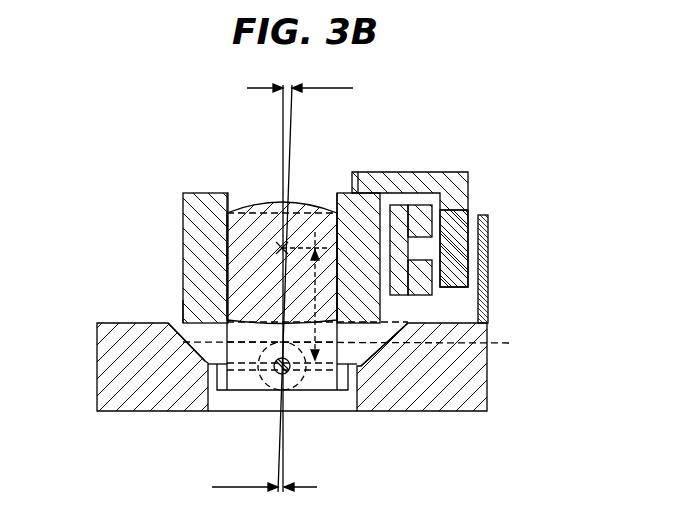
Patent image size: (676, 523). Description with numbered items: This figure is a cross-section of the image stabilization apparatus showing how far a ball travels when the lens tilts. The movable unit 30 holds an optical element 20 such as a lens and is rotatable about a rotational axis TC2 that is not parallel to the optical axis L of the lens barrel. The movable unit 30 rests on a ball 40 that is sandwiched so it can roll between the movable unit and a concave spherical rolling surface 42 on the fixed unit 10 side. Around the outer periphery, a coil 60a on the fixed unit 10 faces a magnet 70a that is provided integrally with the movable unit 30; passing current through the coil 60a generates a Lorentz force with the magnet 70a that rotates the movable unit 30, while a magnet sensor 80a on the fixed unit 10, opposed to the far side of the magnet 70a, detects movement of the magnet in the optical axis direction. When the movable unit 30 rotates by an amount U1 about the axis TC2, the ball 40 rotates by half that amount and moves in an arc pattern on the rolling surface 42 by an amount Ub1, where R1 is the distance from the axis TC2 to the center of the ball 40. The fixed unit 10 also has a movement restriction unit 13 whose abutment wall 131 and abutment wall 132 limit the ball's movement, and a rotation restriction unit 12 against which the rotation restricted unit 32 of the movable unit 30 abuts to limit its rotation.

The fixed unit 10 is at (483, 372).
The rotation restriction unit 12 is at (207, 385).
The movement restriction unit 13 is at (300, 395).
The optical element 20 is at (267, 203).
The movable unit 30 is at (197, 193).
The rotation restricted unit 32 is at (208, 372).
The ball 40 is at (243, 392).
The rolling surface 42 is at (274, 385).
The coil 60a is at (433, 275).
The magnet 70a is at (463, 275).
The magnet sensor 80a is at (485, 247).
The abutment wall 131 is at (183, 300).
The abutment wall 132 is at (372, 342).
The rotational axis TC2 is at (278, 248).
The distance R1 is at (306, 296).
The optical axis L is at (282, 113).
The amount of rotation U1 is at (300, 77).
The amount of movement Ub1 is at (264, 475).